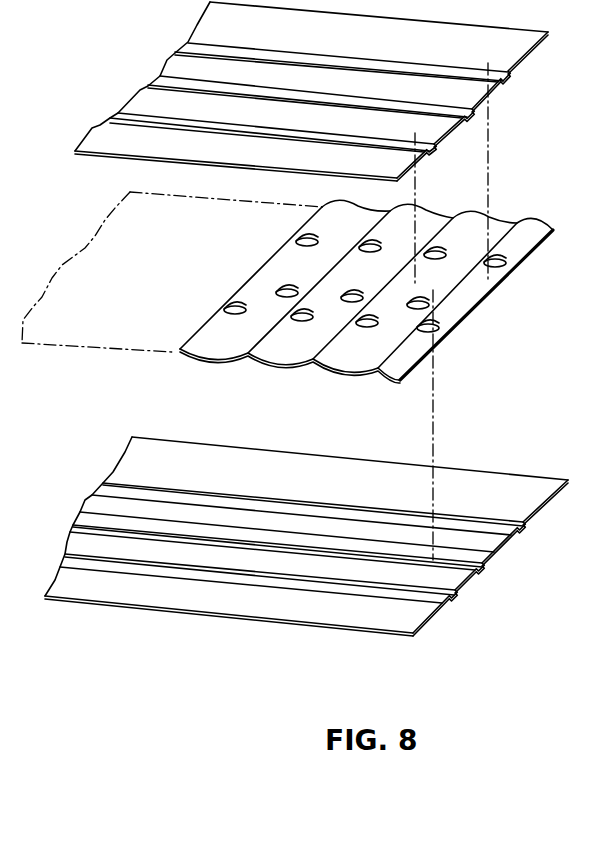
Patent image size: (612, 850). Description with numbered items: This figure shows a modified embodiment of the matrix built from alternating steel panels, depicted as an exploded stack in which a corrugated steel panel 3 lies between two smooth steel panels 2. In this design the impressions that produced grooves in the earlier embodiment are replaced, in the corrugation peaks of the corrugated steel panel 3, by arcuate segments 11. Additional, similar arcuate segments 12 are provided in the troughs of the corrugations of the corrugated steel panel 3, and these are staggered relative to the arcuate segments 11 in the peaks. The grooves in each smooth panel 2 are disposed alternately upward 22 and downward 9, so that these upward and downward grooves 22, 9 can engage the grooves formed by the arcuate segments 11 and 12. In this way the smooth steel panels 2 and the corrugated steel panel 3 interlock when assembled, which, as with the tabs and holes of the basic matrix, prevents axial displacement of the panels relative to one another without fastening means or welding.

The smooth steel panel 2 is at (309, 319).
The downward groove 9 is at (507, 80).
The upward groove 22 is at (483, 560).
The corrugated steel panel 3 is at (377, 291).
The arcuate segment 11 is at (500, 272).
The arcuate segment 12 is at (440, 300).